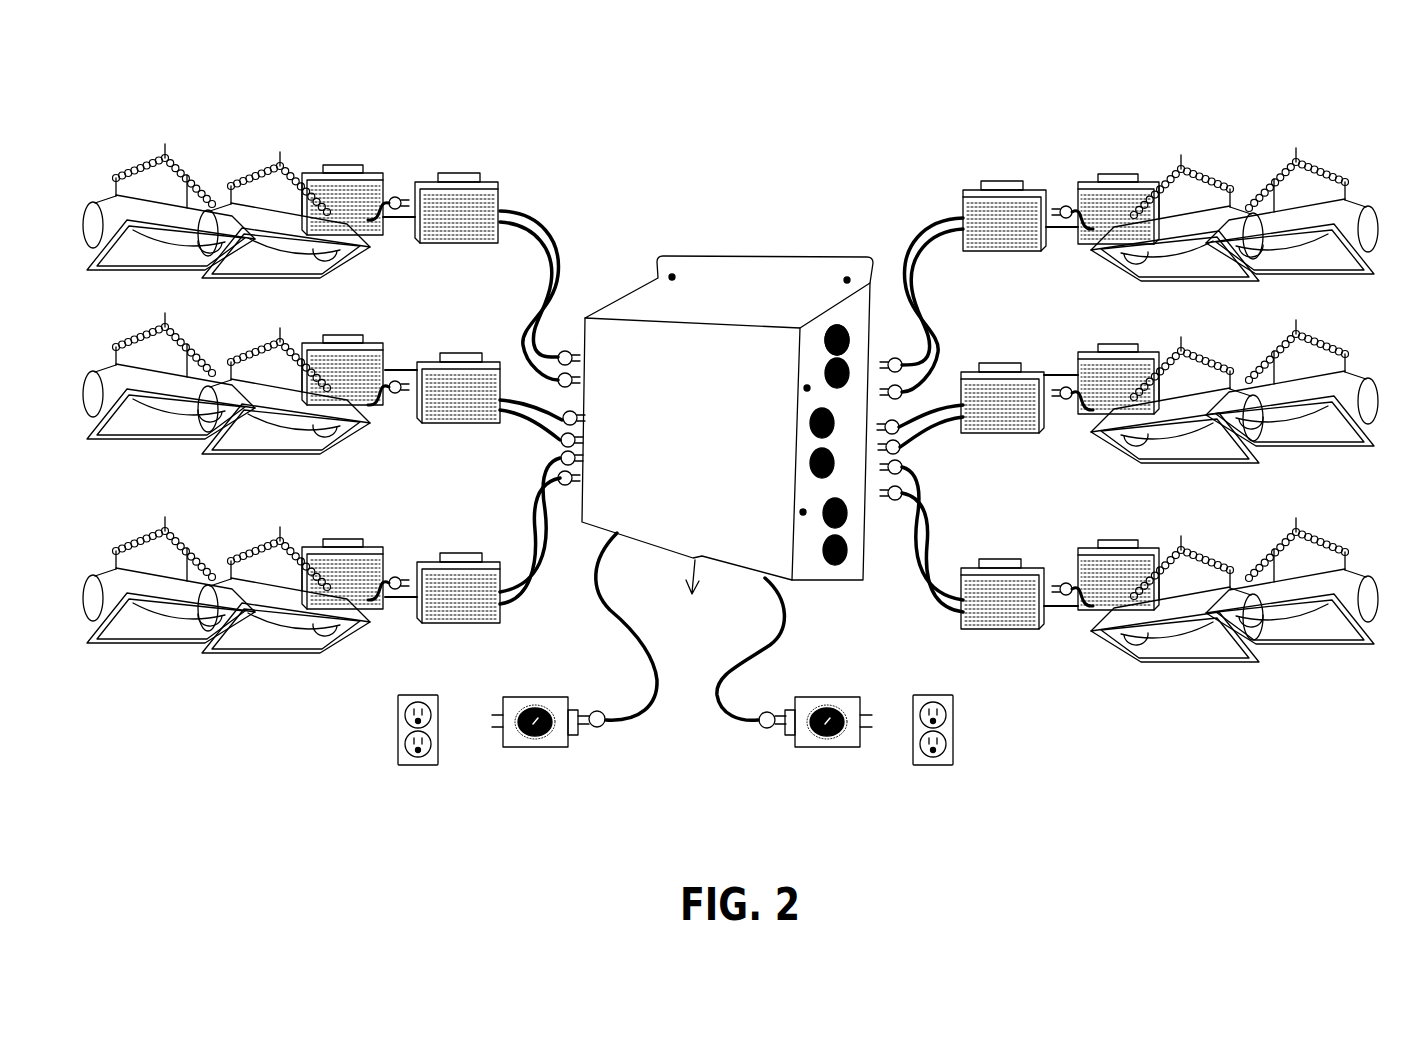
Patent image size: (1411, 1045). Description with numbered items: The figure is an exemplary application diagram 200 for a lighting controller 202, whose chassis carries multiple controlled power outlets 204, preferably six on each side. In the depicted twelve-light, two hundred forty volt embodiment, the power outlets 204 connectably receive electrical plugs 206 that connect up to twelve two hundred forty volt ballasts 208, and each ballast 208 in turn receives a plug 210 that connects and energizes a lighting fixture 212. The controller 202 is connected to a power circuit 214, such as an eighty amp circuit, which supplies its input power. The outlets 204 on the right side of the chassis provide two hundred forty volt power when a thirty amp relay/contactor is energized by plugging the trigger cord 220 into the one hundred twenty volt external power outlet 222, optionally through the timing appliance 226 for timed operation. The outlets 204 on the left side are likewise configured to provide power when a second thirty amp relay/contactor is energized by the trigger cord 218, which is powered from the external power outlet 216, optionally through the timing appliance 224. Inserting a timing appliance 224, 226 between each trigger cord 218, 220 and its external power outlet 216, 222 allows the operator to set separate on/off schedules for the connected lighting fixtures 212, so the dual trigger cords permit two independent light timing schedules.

The application diagram 200 is at (887, 116).
The lighting controller 202 is at (762, 384).
The controller power outlets 204 is at (835, 333).
The electrical plugs 206 is at (570, 350).
The ballast 208 is at (500, 186).
The plug 210 is at (396, 196).
The lighting fixture 212 is at (355, 262).
The power circuit 214 is at (667, 600).
The external power outlet 216 is at (398, 742).
The trigger cord 218 is at (602, 730).
The trigger cord 220 is at (772, 710).
The external power outlet 222 is at (955, 733).
The timing appliance 224 is at (525, 698).
The timing appliance 226 is at (840, 697).